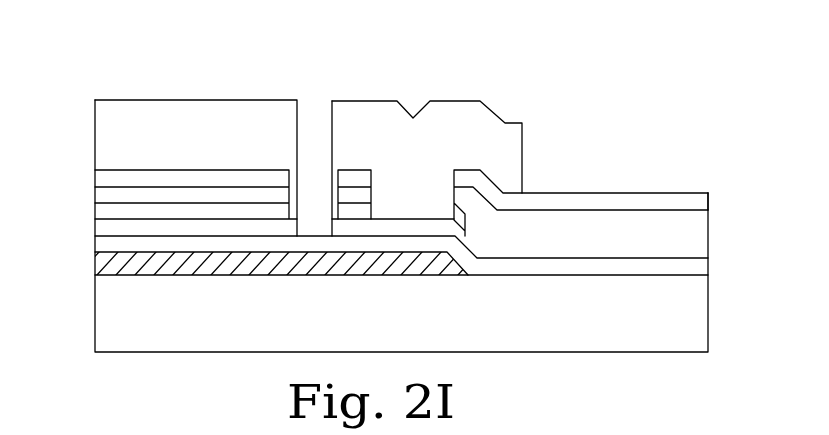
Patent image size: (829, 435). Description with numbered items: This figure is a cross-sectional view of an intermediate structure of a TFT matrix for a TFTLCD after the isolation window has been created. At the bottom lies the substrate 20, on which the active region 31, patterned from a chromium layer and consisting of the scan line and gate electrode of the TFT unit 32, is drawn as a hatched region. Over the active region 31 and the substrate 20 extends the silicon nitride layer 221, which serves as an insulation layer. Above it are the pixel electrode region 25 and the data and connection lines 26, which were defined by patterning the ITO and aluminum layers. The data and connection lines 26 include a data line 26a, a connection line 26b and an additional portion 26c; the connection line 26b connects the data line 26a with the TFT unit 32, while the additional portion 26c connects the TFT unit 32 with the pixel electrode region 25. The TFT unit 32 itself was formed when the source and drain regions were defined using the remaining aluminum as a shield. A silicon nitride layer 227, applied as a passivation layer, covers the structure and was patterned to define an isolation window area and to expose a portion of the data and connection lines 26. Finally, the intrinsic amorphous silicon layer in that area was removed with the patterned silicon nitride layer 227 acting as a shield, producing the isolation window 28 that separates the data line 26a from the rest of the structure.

The substrate 20 is at (687, 313).
The silicon nitride layer 221 is at (688, 268).
The pixel electrode region 25 is at (680, 238).
The active region 31 is at (110, 268).
The isolation window 28 is at (313, 137).
The data line 26a is at (199, 179).
The connection line 26b is at (353, 180).
The TFT unit 32 is at (408, 183).
The silicon nitride layer 227 is at (492, 153).
The additional portion 26c is at (518, 203).
The data and connection lines 26 is at (655, 205).